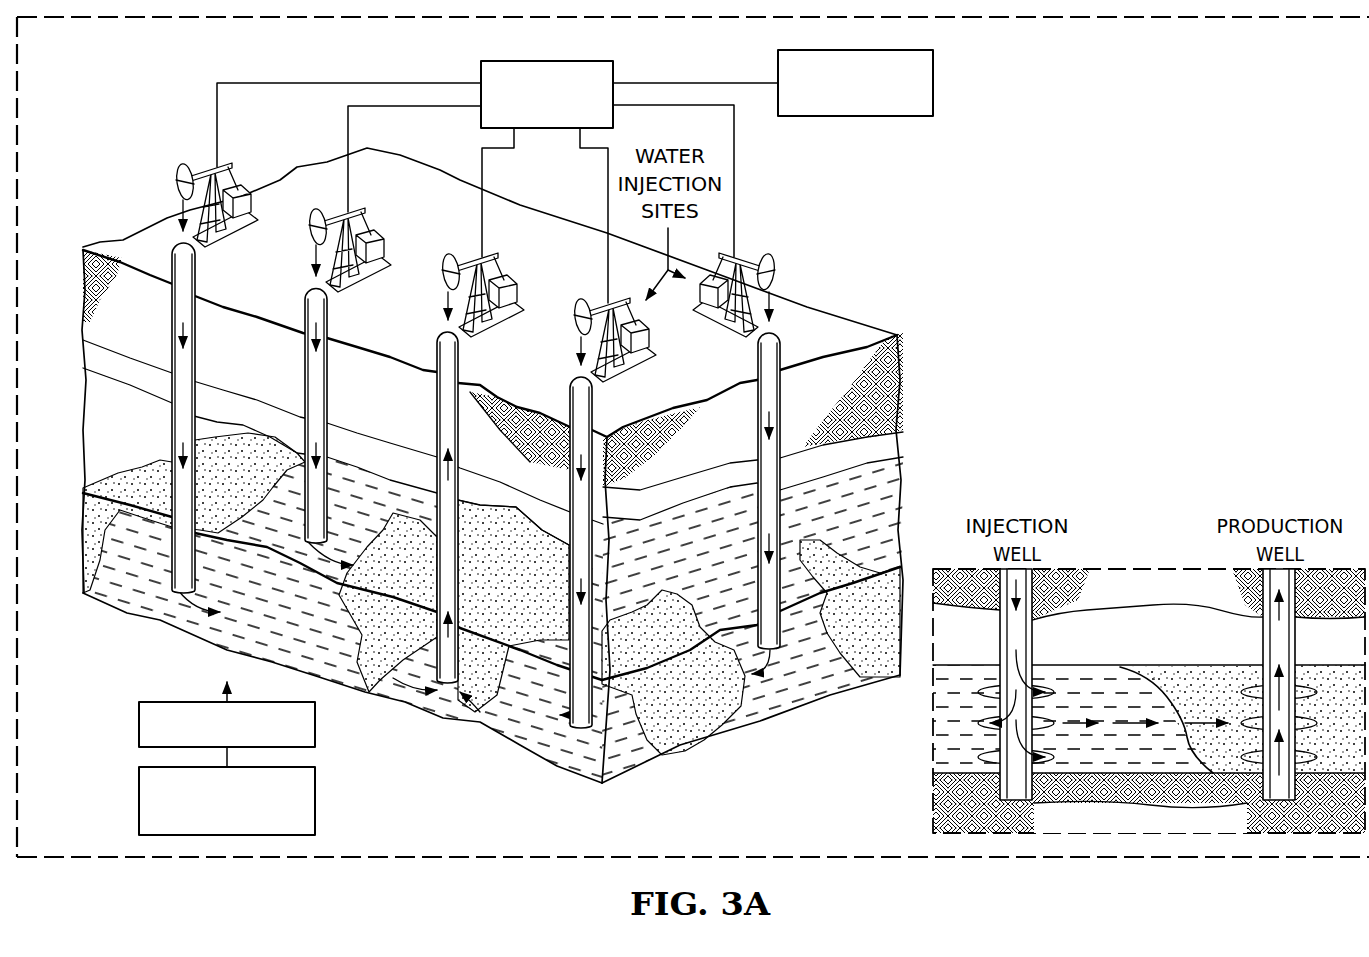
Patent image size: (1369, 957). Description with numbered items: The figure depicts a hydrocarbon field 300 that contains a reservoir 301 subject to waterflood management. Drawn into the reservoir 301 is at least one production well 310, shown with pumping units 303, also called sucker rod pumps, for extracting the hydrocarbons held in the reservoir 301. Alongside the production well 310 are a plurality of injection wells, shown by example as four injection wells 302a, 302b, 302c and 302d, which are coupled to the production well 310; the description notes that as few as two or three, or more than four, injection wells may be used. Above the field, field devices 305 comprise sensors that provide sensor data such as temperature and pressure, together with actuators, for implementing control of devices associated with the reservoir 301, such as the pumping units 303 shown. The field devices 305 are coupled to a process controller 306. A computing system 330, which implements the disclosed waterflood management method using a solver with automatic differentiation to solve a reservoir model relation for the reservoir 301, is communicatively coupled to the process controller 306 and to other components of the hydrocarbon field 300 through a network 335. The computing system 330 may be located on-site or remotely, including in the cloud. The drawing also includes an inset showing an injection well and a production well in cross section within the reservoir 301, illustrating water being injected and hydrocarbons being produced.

The hydrocarbon field 300 is at (1139, 292).
The reservoir 301 is at (497, 748).
The injection well 302a is at (170, 447).
The injection well 302b is at (303, 380).
The injection well 302c is at (595, 402).
The injection well 302d is at (782, 510).
The pumping unit 303 is at (798, 249).
The field devices 305 is at (481, 72).
The process controller 306 is at (935, 72).
The production well 310 is at (437, 420).
The computing system 330 is at (139, 796).
The network 335 is at (139, 720).